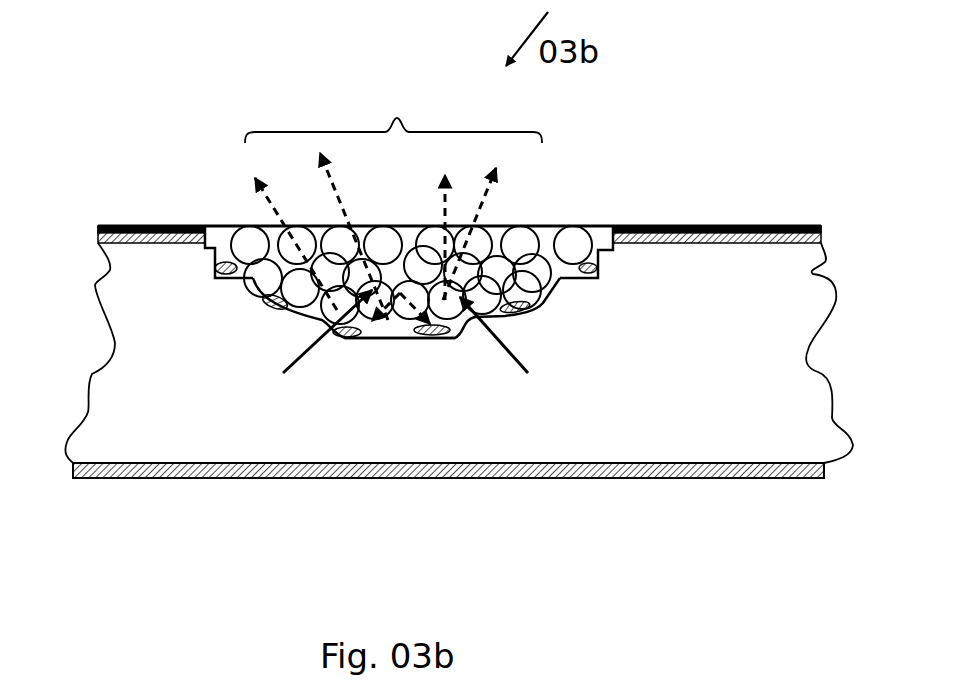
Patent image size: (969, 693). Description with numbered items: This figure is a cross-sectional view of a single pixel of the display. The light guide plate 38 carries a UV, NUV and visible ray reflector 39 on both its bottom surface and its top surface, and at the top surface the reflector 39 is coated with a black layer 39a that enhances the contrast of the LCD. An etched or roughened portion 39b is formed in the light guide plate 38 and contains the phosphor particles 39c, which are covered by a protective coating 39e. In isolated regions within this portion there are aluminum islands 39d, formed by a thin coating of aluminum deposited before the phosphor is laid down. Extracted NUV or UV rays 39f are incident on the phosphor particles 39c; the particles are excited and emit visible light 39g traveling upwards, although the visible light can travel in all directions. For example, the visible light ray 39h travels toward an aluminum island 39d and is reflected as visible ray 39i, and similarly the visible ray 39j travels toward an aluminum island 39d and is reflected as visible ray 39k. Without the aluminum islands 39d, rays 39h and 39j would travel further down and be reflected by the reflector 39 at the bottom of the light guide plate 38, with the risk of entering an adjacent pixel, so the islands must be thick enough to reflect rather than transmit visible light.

The light guide plate 38 is at (153, 420).
The UV, NUV and visible ray reflector 39 is at (97, 242).
The black layer 39a is at (716, 225).
The etched or roughened portion 39b is at (548, 310).
The phosphor particles 39c is at (384, 245).
The aluminum islands 39d is at (348, 336).
The protective coating 39e is at (225, 225).
The extracted NUV or UV rays 39f is at (298, 365).
The visible light 39g is at (320, 117).
The visible light ray 39h is at (387, 340).
The visible ray 39i is at (247, 185).
The visible ray 39j is at (409, 340).
The visible ray 39k is at (500, 197).